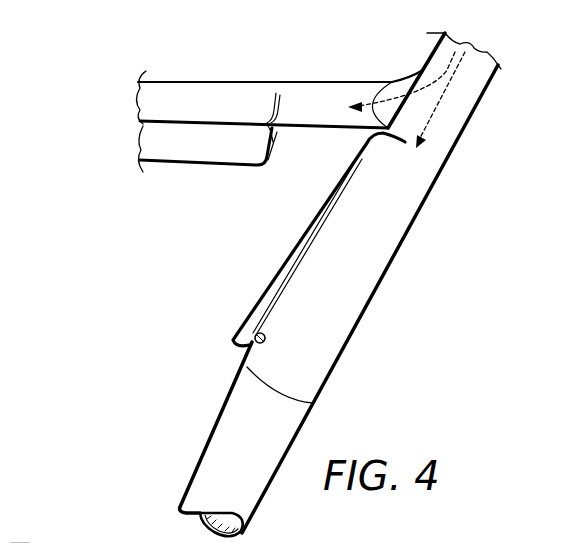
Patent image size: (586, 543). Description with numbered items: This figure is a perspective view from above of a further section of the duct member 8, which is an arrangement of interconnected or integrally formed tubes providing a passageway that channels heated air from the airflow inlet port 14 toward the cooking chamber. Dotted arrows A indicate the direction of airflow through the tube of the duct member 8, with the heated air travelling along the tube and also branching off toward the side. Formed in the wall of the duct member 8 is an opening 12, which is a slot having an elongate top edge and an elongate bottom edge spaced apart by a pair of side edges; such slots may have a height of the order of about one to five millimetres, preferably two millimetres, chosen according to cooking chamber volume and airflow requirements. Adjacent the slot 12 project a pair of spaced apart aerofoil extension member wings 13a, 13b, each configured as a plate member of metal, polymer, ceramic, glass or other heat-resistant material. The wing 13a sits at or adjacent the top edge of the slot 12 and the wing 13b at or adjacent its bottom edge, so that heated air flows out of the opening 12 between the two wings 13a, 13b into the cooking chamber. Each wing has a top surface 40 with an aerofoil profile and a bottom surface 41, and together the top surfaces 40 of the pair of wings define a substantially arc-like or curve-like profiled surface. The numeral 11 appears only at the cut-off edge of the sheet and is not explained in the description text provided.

The duct member 8 is at (113, 116).
The aerofoil extension member wing 13a is at (212, 83).
The aerofoil extension member wing 13b is at (188, 150).
The top surface 40 is at (237, 116).
The bottom surface 41 is at (278, 141).
The opening 12 is at (250, 340).
The airflow inlet port 14 is at (379, 288).
The pipe section 11 is at (23, 540).
The airflow direction A is at (452, 88).